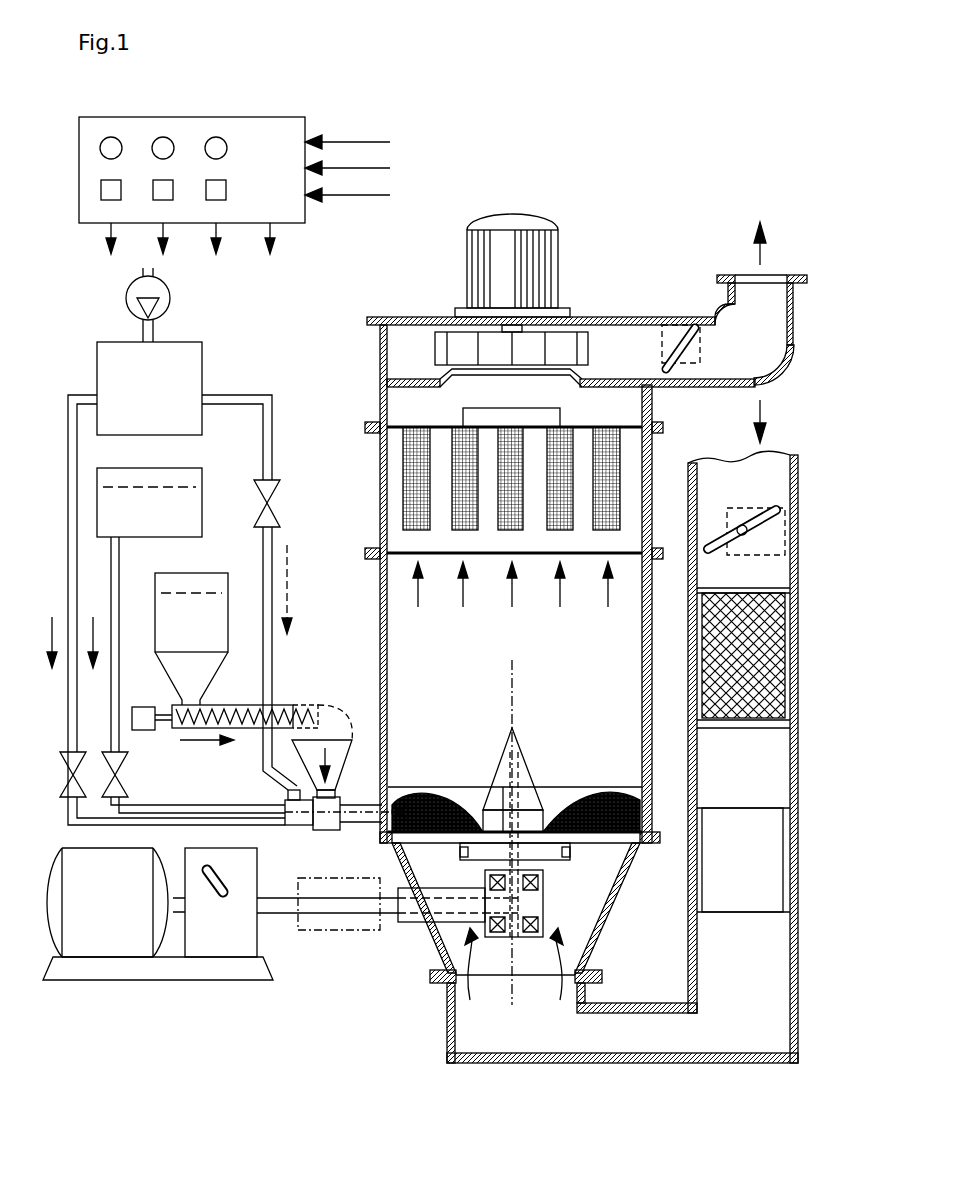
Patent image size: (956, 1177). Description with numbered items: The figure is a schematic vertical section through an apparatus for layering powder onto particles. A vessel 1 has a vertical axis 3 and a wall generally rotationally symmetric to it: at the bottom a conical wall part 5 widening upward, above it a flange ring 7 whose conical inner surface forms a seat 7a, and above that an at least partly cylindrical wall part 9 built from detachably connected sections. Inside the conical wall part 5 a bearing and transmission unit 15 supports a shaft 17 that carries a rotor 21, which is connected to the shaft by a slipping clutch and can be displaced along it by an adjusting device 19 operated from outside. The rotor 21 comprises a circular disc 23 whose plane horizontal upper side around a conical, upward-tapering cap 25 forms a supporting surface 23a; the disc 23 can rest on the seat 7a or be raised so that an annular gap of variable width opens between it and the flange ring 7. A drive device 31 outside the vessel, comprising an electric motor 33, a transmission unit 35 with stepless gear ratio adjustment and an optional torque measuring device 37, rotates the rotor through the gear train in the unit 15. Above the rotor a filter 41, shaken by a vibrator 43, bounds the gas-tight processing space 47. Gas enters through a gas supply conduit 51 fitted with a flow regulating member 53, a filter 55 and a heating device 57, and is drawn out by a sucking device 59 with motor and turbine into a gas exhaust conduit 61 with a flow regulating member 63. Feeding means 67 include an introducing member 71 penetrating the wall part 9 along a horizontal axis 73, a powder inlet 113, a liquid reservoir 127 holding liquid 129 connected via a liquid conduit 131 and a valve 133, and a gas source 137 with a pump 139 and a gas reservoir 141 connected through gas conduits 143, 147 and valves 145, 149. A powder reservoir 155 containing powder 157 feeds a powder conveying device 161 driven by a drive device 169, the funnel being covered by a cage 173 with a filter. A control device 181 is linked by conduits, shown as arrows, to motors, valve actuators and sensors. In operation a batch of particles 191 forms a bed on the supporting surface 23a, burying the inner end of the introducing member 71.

The vessel 1 is at (380, 405).
The vertical axis 3 is at (510, 677).
The conical wall part 5 is at (604, 924).
The flange ring 7 is at (650, 845).
The seat 7a is at (622, 882).
The wall part 9 is at (648, 722).
The bearing and transmission unit 15 is at (492, 945).
The shaft 17 is at (565, 975).
The adjusting device 19 is at (552, 860).
The rotor 21 is at (430, 838).
The circular disc 23 is at (483, 790).
The supporting surface 23a is at (500, 790).
The cap 25 is at (528, 770).
The drive device 31 is at (53, 957).
The electric motor 33 is at (103, 938).
The transmission unit 35 is at (205, 938).
The torque measuring device 37 is at (320, 930).
The filter 41 is at (405, 502).
The vibrator 43 is at (463, 416).
The processing space 47 is at (403, 682).
The gas supply conduit 51 is at (797, 482).
The flow regulating member 53 is at (762, 533).
The filter 55 is at (752, 632).
The heating device 57 is at (745, 808).
The sucking device 59 is at (437, 348).
The gas exhaust conduit 61 is at (712, 318).
The flow regulating member 63 is at (676, 335).
The feeding means 67 is at (68, 818).
The introducing member 71 is at (352, 828).
The axis 73 is at (360, 812).
The powder inlet 113 is at (292, 778).
The liquid reservoir 127 is at (202, 515).
The liquid 129 is at (165, 487).
The liquid conduit 131 is at (95, 827).
The valve 133 is at (62, 762).
The gas source 137 is at (97, 345).
The pump 139 is at (170, 300).
The gas reservoir 141 is at (204, 360).
The gas conduit 143 is at (110, 697).
The valve 145 is at (118, 792).
The gas conduit 147 is at (272, 478).
The valve 149 is at (272, 510).
The powder reservoir 155 is at (155, 620).
The powder 157 is at (195, 592).
The powder conveying device 161 is at (224, 705).
The drive device 169 is at (144, 731).
The cage 173 is at (340, 710).
The control device 181 is at (305, 121).
The particles 191 is at (595, 790).